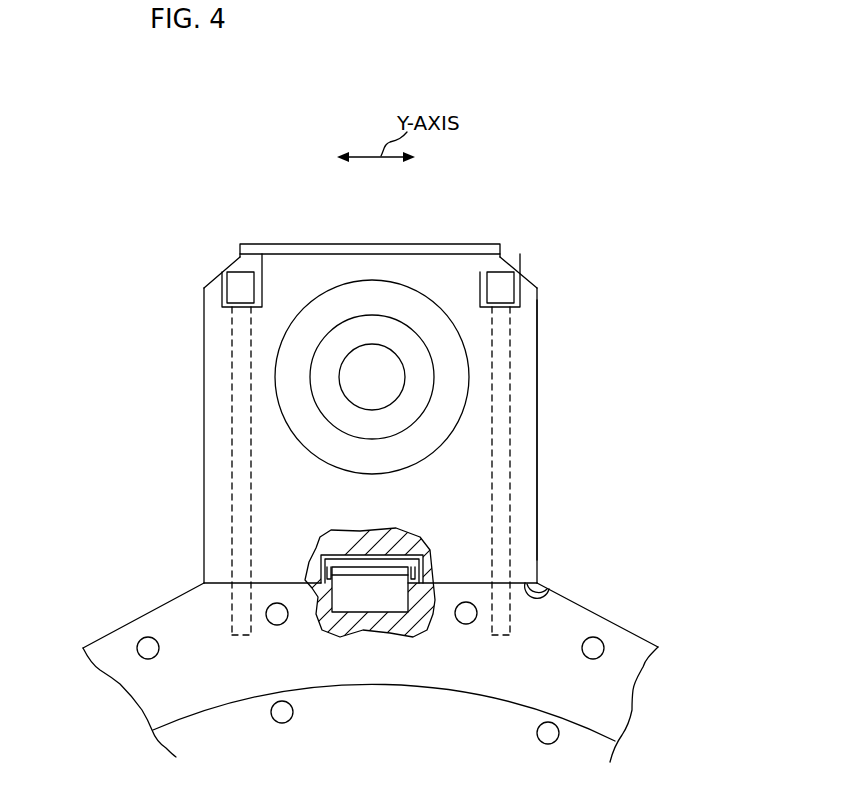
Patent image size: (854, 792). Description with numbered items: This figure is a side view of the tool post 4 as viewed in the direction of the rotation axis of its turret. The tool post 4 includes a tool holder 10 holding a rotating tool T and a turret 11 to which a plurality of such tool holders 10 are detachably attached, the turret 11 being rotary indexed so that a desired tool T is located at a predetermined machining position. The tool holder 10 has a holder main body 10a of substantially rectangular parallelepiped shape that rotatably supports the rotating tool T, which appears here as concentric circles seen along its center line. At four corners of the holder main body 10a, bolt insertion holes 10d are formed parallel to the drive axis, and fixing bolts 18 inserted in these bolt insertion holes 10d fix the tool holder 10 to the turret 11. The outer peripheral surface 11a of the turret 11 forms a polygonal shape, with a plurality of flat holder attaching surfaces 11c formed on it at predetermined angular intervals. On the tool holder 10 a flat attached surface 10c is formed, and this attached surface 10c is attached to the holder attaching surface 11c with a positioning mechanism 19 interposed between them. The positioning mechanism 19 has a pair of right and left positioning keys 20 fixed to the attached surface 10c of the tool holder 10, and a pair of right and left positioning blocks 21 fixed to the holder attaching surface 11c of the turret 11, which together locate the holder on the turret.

The tool post 4 is at (102, 362).
The tool holder 10 is at (492, 240).
The holder main body 10a is at (538, 333).
The attached surface 10c is at (555, 590).
The bolt insertion holes 10d is at (233, 402).
The turret 11 is at (642, 633).
The outer peripheral surface 11a is at (193, 583).
The holder attaching surface 11c is at (520, 580).
The fixing bolts 18 is at (238, 273).
The positioning mechanism 19 is at (336, 545).
The positioning keys 20 is at (421, 575).
The positioning blocks 21 is at (393, 614).
The rotating tool T is at (405, 383).